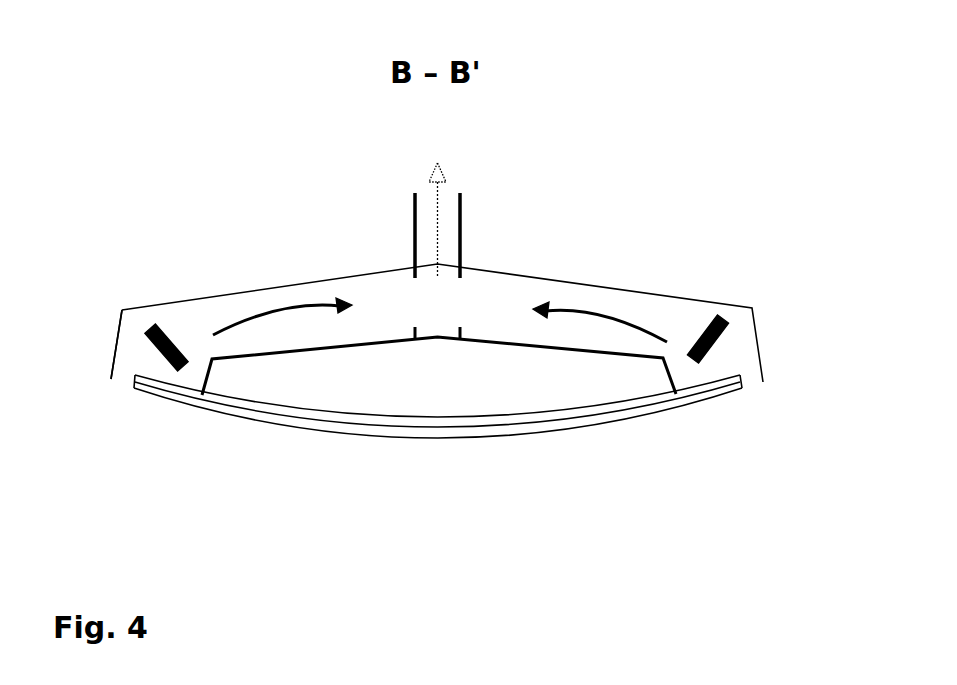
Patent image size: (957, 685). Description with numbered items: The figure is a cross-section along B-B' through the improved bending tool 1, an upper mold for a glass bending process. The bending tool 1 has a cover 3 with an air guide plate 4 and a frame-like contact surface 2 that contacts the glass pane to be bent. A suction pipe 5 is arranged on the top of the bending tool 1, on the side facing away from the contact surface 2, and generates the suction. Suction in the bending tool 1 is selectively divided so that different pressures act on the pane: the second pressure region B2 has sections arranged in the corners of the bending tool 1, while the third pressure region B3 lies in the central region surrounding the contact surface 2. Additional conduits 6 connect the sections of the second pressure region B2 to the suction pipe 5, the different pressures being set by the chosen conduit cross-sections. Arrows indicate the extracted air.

The bending tool 1 is at (547, 153).
The contact surface 2 is at (167, 333).
The cover 3 is at (237, 285).
The air guide plate 4 is at (117, 340).
The suction pipe 5 is at (415, 227).
The conduits 6 is at (292, 292).
The second pressure region B2 is at (130, 337).
The third pressure region B3 is at (459, 397).